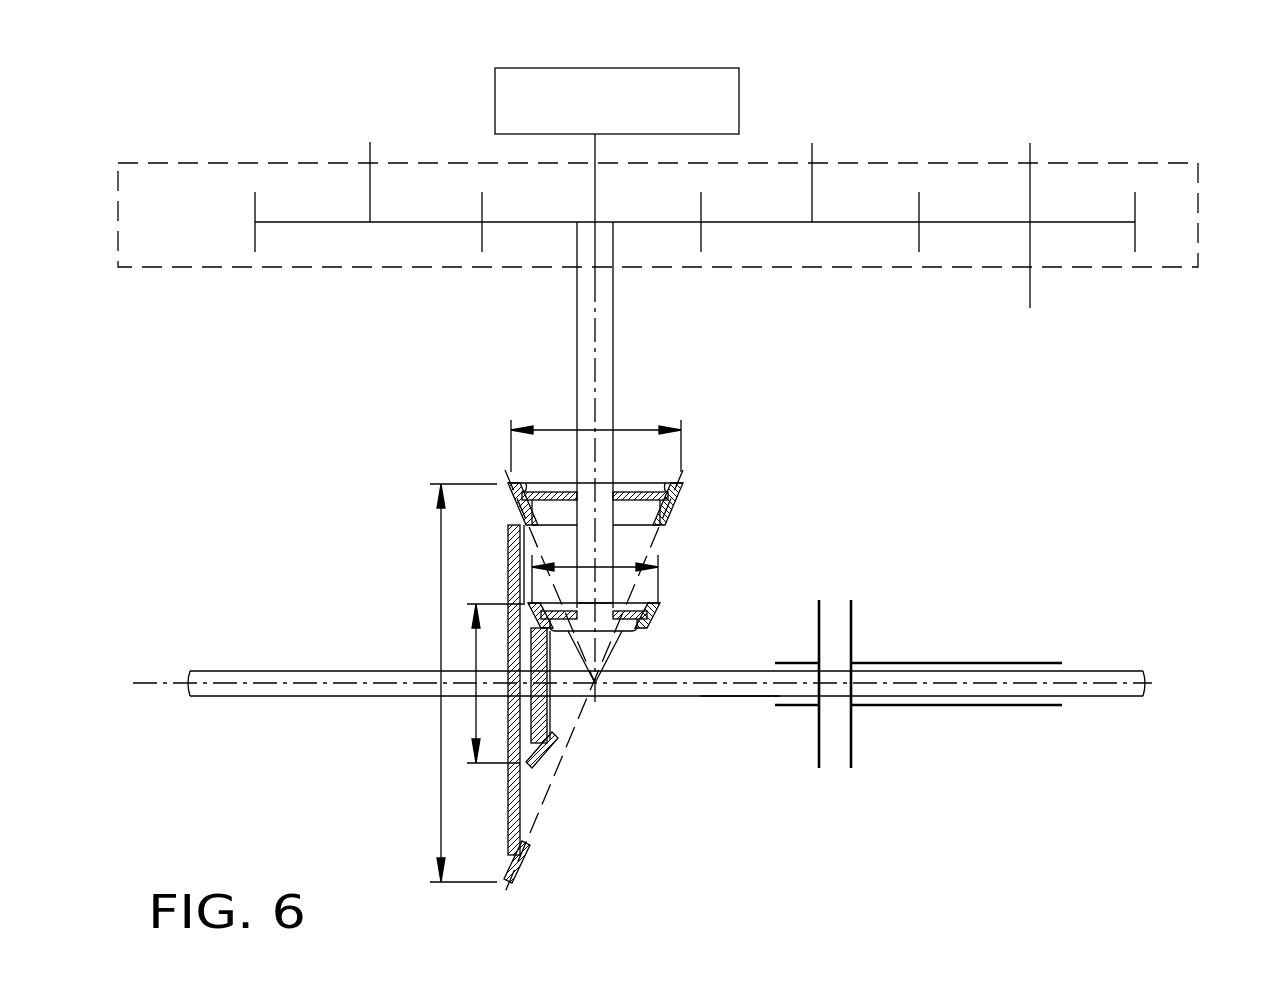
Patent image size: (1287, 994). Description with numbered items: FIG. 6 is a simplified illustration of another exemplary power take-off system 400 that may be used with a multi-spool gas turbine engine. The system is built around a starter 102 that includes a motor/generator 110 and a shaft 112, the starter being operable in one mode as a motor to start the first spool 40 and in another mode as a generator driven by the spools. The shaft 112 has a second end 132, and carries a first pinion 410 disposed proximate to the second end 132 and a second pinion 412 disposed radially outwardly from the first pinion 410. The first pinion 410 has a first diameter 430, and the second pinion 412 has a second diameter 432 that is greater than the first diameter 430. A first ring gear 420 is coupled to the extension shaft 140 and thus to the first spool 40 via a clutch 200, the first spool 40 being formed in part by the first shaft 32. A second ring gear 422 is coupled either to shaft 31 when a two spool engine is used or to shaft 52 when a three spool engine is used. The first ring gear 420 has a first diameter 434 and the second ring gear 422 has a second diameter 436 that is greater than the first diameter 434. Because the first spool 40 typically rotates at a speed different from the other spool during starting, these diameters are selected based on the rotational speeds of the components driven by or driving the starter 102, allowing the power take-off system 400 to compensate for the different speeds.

The starter 102 is at (777, 64).
The power take-off system 400 is at (1144, 96).
The motor/generator 110 is at (740, 100).
The shaft 112 is at (613, 322).
The second diameter 432 is at (557, 430).
The second pinion 412 is at (677, 507).
The first diameter 430 is at (625, 565).
The second end 132 is at (610, 607).
The first pinion 410 is at (655, 622).
The clutch 200 is at (871, 593).
The first spool 40 is at (1032, 663).
The shaft 31 is at (638, 656).
The shaft 52 is at (228, 670).
The first diameter 434 is at (474, 660).
The second diameter 436 is at (440, 772).
The first ring gear 420 is at (548, 760).
The second ring gear 422 is at (522, 868).
The extension shaft 140 is at (712, 700).
The first shaft 32 is at (960, 705).